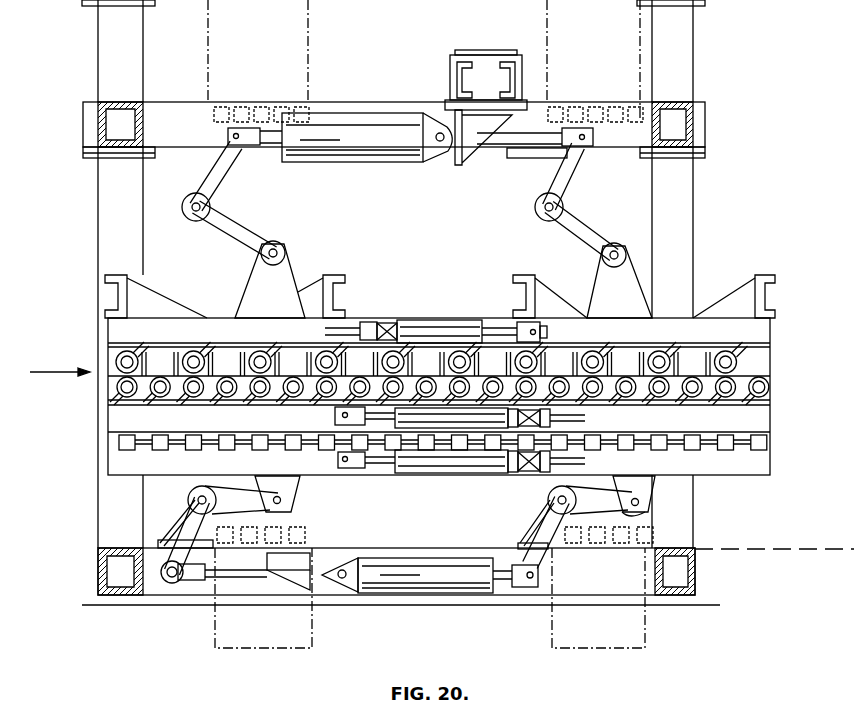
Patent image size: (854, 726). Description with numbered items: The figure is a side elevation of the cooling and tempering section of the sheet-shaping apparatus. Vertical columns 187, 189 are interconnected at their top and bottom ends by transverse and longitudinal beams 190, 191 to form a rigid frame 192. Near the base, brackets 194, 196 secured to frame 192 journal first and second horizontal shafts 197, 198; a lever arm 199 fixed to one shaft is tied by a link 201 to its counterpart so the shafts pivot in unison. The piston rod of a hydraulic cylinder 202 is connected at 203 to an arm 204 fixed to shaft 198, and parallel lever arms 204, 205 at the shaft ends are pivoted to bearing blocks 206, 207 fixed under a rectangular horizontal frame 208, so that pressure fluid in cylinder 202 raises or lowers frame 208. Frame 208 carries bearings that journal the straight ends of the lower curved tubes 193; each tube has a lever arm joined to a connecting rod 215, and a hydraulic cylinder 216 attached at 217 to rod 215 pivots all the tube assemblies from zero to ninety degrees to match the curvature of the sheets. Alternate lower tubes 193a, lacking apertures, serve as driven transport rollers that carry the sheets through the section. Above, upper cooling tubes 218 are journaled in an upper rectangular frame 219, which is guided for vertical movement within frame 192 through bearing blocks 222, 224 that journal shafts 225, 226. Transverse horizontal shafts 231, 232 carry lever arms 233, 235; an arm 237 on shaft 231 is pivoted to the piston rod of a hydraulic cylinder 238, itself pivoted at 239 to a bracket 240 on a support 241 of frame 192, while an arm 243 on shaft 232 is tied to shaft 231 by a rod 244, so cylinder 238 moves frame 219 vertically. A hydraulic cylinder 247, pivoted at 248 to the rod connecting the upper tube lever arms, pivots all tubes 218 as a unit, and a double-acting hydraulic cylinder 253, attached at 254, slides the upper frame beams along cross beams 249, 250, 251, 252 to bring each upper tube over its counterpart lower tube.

The vertical column 187 is at (97, 233).
The vertical column 189 is at (685, 212).
The transverse and longitudinal beams 190 is at (690, 128).
The transverse and longitudinal beams 191 is at (696, 568).
The rigid frame 192 is at (700, 262).
The lower curved tube 193 is at (122, 398).
The lower transport tube 193a is at (691, 398).
The bracket 194 is at (168, 535).
The bracket 196 is at (530, 528).
The first horizontal shaft 197 is at (200, 500).
The second horizontal shaft 198 is at (562, 494).
The lever arm 199 is at (160, 566).
The link 201 is at (238, 570).
The hydraulic cylinder 202 is at (430, 580).
The connection 203 is at (530, 588).
The lever arm 204 is at (272, 503).
The lever arm 205 is at (640, 510).
The bearing block 206 is at (291, 487).
The bearing block 207 is at (642, 487).
The rectangular horizontal frame 208 is at (766, 462).
The connecting rod 215 is at (110, 433).
The hydraulic cylinder 216 is at (432, 475).
The pivotal attachment 217 is at (345, 469).
The upper cooling tube 218 is at (181, 349).
The upper rectangular frame 219 is at (772, 294).
The bearing block 222 is at (272, 282).
The bearing block 224 is at (612, 278).
The shaft 225 is at (283, 248).
The shaft 226 is at (617, 250).
The transverse horizontal shaft 231 is at (195, 217).
The transverse horizontal shaft 232 is at (533, 213).
The lever arm 233 is at (240, 230).
The lever arm 235 is at (584, 228).
The arm 237 is at (229, 168).
The hydraulic cylinder 238 is at (384, 147).
The pivot 239 is at (440, 146).
The bracket 240 is at (471, 147).
The support 241 is at (527, 77).
The arm 243 is at (584, 170).
The rod 244 is at (548, 150).
The hydraulic cylinder 247 is at (490, 472).
The pivot 248 is at (335, 415).
The cross beam 249 is at (118, 296).
The cross beam 250 is at (335, 297).
The cross beam 251 is at (513, 292).
The cross beam 252 is at (757, 277).
The hydraulic cylinder 253 is at (441, 326).
The pivotal attachment 254 is at (547, 333).